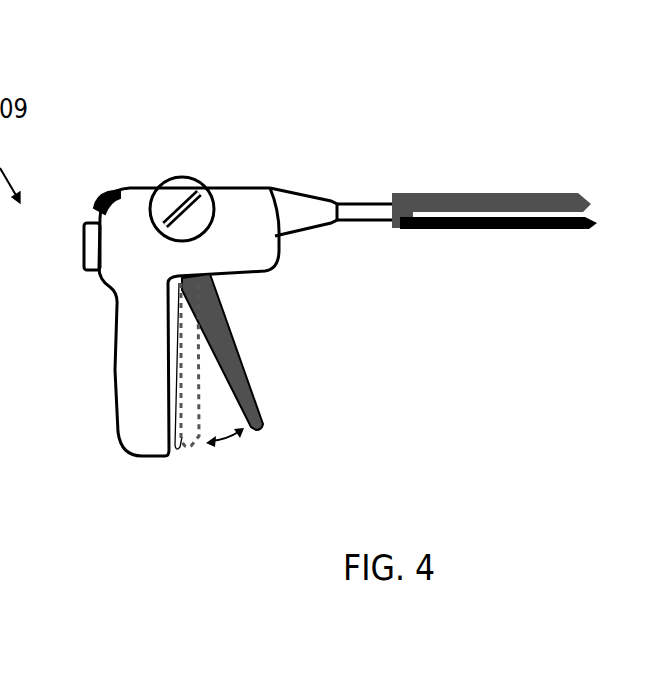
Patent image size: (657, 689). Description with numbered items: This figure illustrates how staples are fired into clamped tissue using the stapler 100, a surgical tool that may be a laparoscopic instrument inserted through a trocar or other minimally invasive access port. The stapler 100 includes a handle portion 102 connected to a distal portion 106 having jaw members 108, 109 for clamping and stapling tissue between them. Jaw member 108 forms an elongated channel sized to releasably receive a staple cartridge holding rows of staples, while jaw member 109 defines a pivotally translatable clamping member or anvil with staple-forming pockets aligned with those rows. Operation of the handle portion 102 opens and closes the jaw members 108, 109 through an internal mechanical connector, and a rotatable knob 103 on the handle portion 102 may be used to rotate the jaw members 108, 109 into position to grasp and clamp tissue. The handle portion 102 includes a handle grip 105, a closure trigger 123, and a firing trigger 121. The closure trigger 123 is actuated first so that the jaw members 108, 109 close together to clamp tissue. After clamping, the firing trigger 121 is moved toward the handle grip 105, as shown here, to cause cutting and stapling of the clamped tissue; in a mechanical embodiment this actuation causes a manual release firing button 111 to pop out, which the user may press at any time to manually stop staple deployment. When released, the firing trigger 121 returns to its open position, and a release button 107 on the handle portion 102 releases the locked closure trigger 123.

The stapler 100 is at (399, 286).
The handle portion 102 is at (330, 119).
The rotatable knob 103 is at (297, 210).
The handle grip 105 is at (130, 400).
The distal portion 106 is at (514, 187).
The release button 107 is at (90, 240).
The jaw member 108 is at (508, 230).
The jaw member 109 is at (547, 198).
The manual release firing button 111 is at (99, 198).
The firing trigger 121 is at (233, 350).
The closure trigger 123 is at (177, 440).